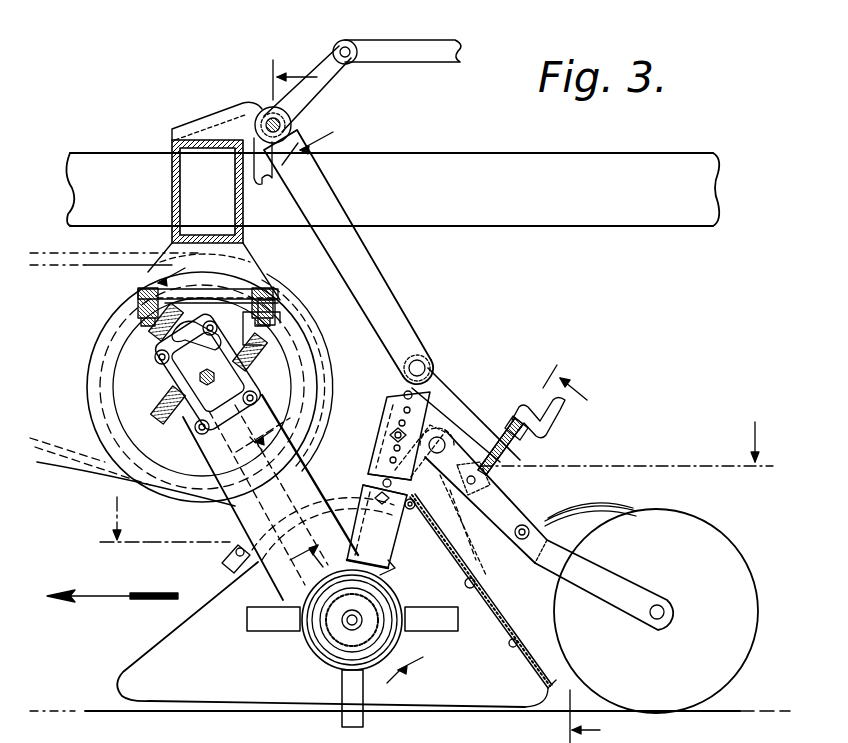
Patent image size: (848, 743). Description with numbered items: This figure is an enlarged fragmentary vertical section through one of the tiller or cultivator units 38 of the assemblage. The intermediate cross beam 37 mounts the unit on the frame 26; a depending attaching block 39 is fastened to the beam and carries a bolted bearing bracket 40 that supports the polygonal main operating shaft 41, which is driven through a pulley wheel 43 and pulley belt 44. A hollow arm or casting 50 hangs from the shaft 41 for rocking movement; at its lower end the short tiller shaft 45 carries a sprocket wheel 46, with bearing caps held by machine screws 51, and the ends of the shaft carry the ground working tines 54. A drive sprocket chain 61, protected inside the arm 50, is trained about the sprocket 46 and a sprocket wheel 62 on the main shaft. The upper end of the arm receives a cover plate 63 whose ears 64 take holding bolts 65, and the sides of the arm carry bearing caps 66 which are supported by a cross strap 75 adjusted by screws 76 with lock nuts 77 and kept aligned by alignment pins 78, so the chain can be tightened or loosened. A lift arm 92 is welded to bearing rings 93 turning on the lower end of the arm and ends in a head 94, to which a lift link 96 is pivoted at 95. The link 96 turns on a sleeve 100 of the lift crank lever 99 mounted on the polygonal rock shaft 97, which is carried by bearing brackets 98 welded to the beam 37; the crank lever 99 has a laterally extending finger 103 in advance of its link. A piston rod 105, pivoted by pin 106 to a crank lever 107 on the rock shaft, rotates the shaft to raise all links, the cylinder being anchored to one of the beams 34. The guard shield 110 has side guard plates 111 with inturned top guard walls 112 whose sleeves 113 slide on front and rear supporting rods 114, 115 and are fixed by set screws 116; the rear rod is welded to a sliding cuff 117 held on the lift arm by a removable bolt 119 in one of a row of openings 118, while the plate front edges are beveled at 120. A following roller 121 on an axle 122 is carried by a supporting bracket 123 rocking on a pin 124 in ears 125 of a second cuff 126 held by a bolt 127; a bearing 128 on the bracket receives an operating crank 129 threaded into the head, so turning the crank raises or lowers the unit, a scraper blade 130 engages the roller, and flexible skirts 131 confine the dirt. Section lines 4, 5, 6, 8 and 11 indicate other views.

The section line 4- 4 is at (429, 496).
The section line 5- 5 is at (565, 548).
The section line 6- 6 is at (294, 114).
The section line 8- 8 is at (227, 351).
The section line 11- 11 is at (356, 617).
The frame 26 is at (545, 153).
The beam 34 is at (392, 160).
The intermediate cross beam 37 is at (172, 150).
The tiller or cultivator unit 38 is at (230, 512).
The depending attaching block 39 is at (262, 252).
The bearing bracket 40 is at (250, 335).
The main operating shaft 41 is at (160, 390).
The pulley wheel 43 is at (112, 440).
The pulley belt 44 is at (82, 478).
The tiller shaft 45 is at (368, 603).
The sprocket wheel 46 is at (362, 616).
The hollow arm or casting 50 is at (245, 518).
The machine screw 51 is at (292, 596).
The ground working teeth or tines 54 is at (440, 624).
The drive sprocket chain 61 is at (258, 395).
The sprocket wheel 62 is at (250, 425).
The cover plate 63 is at (160, 346).
The ear 64 is at (285, 332).
The holding bolt 65 is at (290, 350).
The bearing cap 66 is at (232, 309).
The cross strap 75 is at (130, 325).
The screw 76 is at (200, 304).
The lock nut 77 is at (148, 308).
The alignment pin 78 is at (140, 353).
The lift arm 92 is at (388, 562).
The bearing ring 93 is at (325, 655).
The head 94 is at (430, 382).
The pivot 95 is at (428, 352).
The lift link 96 is at (372, 292).
The rock shaft 97 is at (305, 122).
The bearing bracket 98 is at (218, 115).
The lift crank lever 99 is at (260, 186).
The sleeve 100 is at (252, 125).
The laterally extending finger 103 is at (285, 188).
The piston rod 105 is at (420, 40).
The pivot pin 106 is at (337, 42).
The crank lever 107 is at (320, 88).
The guard shield 110 is at (215, 575).
The guard plate 111 is at (468, 590).
The top guard wall 112 is at (445, 528).
The sleeve 113 is at (440, 505).
The front supporting rod 114 is at (230, 552).
The rear supporting rod 115 is at (445, 520).
The set screw 116 is at (416, 503).
The sliding cuff 117 is at (377, 526).
The opening 118 is at (380, 400).
The removable bolt 119 is at (374, 512).
The beveled front portion 120 is at (162, 696).
The following roller or wheel 121 is at (750, 570).
The axle 122 is at (660, 605).
The supporting bracket 123 is at (508, 498).
The pin 124 is at (445, 440).
The ear 125 is at (433, 427).
The second adjustable cuff 126 is at (385, 418).
The bolt 127 is at (393, 435).
The bearing 128 is at (492, 478).
The operating crank 129 is at (550, 425).
The scraper blade 130 is at (604, 508).
The flexible skirt 131 is at (532, 665).